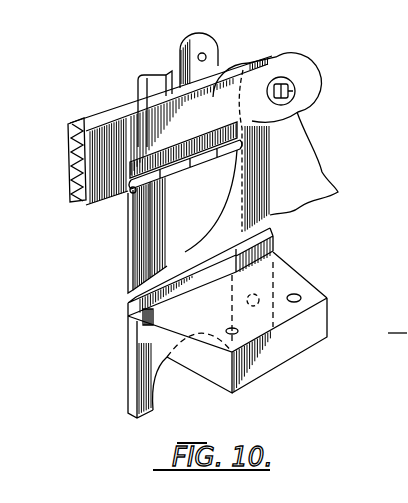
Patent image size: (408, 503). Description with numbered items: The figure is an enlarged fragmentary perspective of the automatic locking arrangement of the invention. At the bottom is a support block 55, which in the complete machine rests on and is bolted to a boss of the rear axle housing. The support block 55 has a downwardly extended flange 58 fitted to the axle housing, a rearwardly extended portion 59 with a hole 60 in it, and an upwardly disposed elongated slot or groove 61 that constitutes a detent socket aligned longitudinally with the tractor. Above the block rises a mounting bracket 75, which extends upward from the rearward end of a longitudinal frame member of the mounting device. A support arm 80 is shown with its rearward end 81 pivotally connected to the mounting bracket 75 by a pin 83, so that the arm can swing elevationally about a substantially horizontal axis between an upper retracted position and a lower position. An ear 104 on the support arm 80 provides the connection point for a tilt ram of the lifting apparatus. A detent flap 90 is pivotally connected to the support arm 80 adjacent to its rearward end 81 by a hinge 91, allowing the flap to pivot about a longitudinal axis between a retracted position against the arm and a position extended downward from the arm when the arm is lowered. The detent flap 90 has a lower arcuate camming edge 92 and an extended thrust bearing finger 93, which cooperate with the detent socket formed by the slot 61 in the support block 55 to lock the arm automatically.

The support block 55 is at (318, 323).
The downwardly extended flange 58 is at (131, 380).
The rearwardly extended portion 59 is at (274, 257).
The hole 60 is at (262, 296).
The elongated slot or groove 61 is at (143, 318).
The mounting bracket 75 is at (318, 172).
The support arm 80 is at (78, 160).
The rearward end 81 is at (248, 62).
The pin 83 is at (299, 95).
The detent flap 90 is at (143, 235).
The hinge 91 is at (179, 164).
The lower arcuate camming edge 92 is at (204, 232).
The thrust bearing finger 93 is at (147, 88).
The ear 104 is at (182, 50).